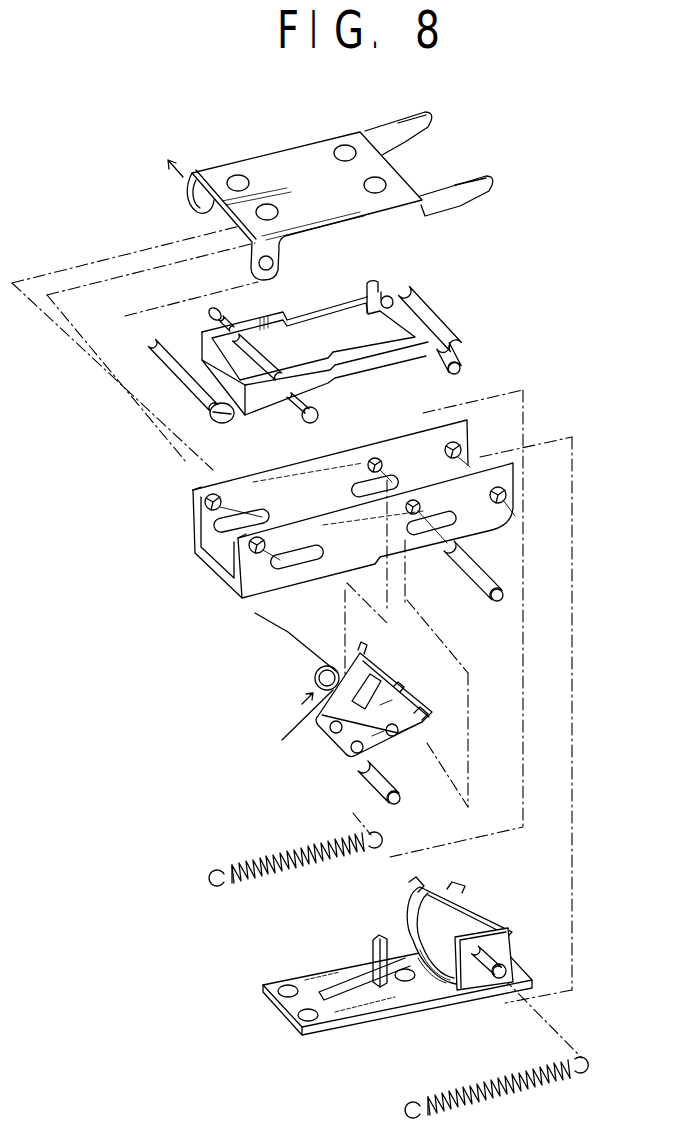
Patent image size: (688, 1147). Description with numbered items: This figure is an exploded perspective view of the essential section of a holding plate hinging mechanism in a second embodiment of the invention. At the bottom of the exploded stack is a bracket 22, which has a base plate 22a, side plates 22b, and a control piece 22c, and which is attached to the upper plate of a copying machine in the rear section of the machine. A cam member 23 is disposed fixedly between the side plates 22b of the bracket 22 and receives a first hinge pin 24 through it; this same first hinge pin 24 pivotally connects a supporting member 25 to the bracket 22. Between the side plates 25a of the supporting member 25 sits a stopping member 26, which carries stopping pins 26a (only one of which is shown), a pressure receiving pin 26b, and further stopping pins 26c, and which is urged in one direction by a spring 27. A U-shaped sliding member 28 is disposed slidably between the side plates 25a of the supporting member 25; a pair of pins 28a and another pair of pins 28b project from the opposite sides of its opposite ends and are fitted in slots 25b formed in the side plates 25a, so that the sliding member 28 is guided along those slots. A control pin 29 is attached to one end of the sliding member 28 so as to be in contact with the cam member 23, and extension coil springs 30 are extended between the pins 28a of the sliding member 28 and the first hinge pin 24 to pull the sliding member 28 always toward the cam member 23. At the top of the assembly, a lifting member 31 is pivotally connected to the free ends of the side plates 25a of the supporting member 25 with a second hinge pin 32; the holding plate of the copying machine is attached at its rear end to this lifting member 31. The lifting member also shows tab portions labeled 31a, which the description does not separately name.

The bracket 22 is at (431, 959).
The base plate 22a is at (347, 1013).
The side plates 22b is at (459, 888).
The control piece 22c is at (374, 951).
The cam member 23 is at (475, 920).
The first hinge pin 24 is at (495, 980).
The supporting member 25 is at (365, 514).
The side plates 25a is at (470, 434).
The slots 25b is at (258, 512).
The stopping member 26 is at (408, 690).
The stopping pins 26a is at (430, 716).
The pressure receiving pin 26b is at (370, 786).
The stopping pins 26c is at (366, 653).
The spring 27 is at (315, 680).
The U-shaped sliding member 28 is at (308, 338).
The pins 28a is at (210, 318).
The pins 28b is at (372, 290).
The control pin 29 is at (437, 315).
The extension coil springs 30 is at (267, 857).
The lifting member 31 is at (333, 123).
The hook tabs 31a is at (428, 113).
The second hinge pin 32 is at (173, 370).